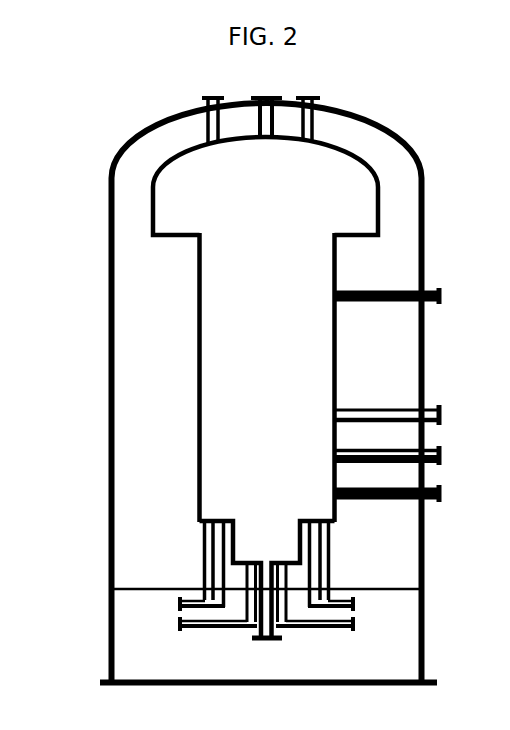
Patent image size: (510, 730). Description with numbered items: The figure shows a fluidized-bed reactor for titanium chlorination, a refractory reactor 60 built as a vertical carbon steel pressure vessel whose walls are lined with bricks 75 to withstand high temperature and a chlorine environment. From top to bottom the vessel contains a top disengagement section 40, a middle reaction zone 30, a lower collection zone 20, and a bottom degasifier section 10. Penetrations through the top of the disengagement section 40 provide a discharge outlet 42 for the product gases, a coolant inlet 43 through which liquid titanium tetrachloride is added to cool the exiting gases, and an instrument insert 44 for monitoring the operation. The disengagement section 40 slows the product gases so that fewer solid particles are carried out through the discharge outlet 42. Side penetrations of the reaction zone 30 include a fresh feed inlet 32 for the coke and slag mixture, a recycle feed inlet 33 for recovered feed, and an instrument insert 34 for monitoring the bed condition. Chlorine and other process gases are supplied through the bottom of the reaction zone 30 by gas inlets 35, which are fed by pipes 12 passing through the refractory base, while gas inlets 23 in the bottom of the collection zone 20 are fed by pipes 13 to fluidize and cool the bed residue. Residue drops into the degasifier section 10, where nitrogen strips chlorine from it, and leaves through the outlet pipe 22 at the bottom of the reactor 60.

The degasifier section 10 is at (276, 627).
The pipes 12 is at (266, 604).
The pipes 13 is at (264, 626).
The lower collection zone 20 is at (267, 579).
The outlet pipe 22 is at (267, 651).
The gas inlets 23 is at (261, 581).
The middle reaction zone 30 is at (267, 377).
The fresh feed inlet 32 is at (402, 413).
The recycle feed inlet 33 is at (403, 493).
The instrument insert 34 is at (404, 375).
The gas inlets 35 is at (266, 551).
The top disengagement section 40 is at (265, 186).
The discharge outlet 42 is at (266, 105).
The coolant inlet 43 is at (213, 108).
The instrument insert 44 is at (308, 107).
The refractory reactor 60 is at (96, 325).
The bricks 75 is at (266, 499).